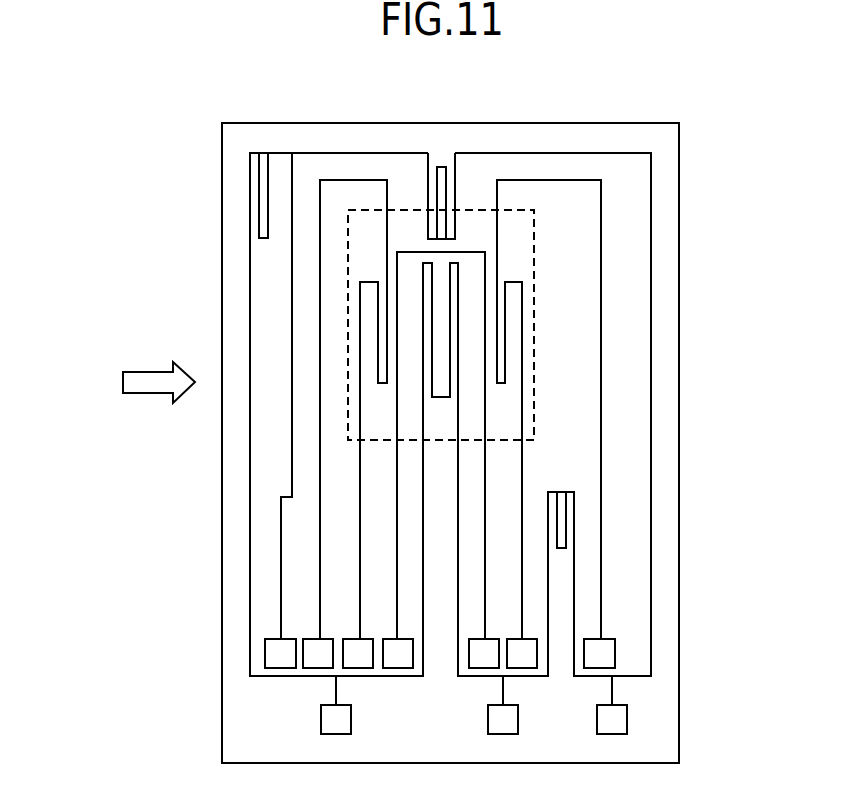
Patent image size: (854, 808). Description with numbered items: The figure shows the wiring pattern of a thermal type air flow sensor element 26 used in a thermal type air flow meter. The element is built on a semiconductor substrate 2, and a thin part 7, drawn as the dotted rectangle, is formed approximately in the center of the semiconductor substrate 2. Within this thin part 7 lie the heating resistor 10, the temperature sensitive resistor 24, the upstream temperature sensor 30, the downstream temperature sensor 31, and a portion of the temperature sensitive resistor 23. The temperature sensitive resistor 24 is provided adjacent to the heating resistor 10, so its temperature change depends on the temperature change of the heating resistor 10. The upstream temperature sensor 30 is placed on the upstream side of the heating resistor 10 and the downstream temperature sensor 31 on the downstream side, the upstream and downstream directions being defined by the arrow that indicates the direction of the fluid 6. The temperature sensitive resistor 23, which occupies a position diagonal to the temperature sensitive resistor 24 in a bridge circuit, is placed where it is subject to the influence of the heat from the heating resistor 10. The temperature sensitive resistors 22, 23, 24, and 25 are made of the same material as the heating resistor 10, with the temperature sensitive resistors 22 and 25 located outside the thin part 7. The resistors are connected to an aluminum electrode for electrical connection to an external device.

The semiconductor substrate 2 is at (672, 174).
The thermal type air flow sensor element 26 is at (615, 122).
The temperature sensitive resistor 23 is at (428, 180).
The temperature sensitive resistor 25 is at (258, 180).
The upstream temperature sensor 30 is at (360, 302).
The temperature sensitive resistor 24 is at (458, 271).
The downstream temperature sensor 31 is at (522, 323).
The thin part 7 is at (534, 369).
The heating resistor 10 is at (483, 425).
The temperature sensitive resistor 22 is at (569, 520).
The fluid 6 is at (150, 393).